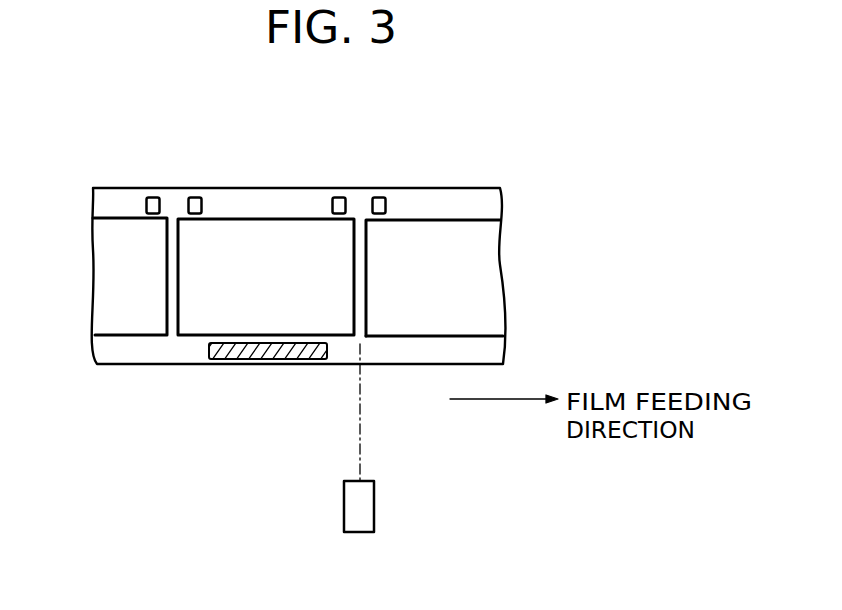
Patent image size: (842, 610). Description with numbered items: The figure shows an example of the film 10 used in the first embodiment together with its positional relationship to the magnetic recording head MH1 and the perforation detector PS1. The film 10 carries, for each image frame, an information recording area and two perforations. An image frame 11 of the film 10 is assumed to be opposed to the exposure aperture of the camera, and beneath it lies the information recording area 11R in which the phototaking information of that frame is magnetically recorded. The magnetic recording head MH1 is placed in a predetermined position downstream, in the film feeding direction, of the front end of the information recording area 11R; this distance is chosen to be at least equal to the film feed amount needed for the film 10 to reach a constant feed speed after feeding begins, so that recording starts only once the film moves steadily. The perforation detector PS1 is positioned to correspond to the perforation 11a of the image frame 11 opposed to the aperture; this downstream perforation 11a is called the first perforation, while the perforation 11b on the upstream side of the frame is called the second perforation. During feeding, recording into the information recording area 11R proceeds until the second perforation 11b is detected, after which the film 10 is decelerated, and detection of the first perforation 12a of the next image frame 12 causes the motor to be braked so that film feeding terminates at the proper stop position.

The film 10 is at (482, 188).
The image frame 11 is at (262, 250).
The first perforation 11a is at (337, 210).
The second perforation 11b is at (194, 197).
The information recording area 11R is at (281, 364).
The next image frame 12 is at (127, 243).
The first perforation of next image frame 12a is at (153, 197).
The perforation detector PS1 is at (335, 170).
The magnetic recording head MH1 is at (374, 504).